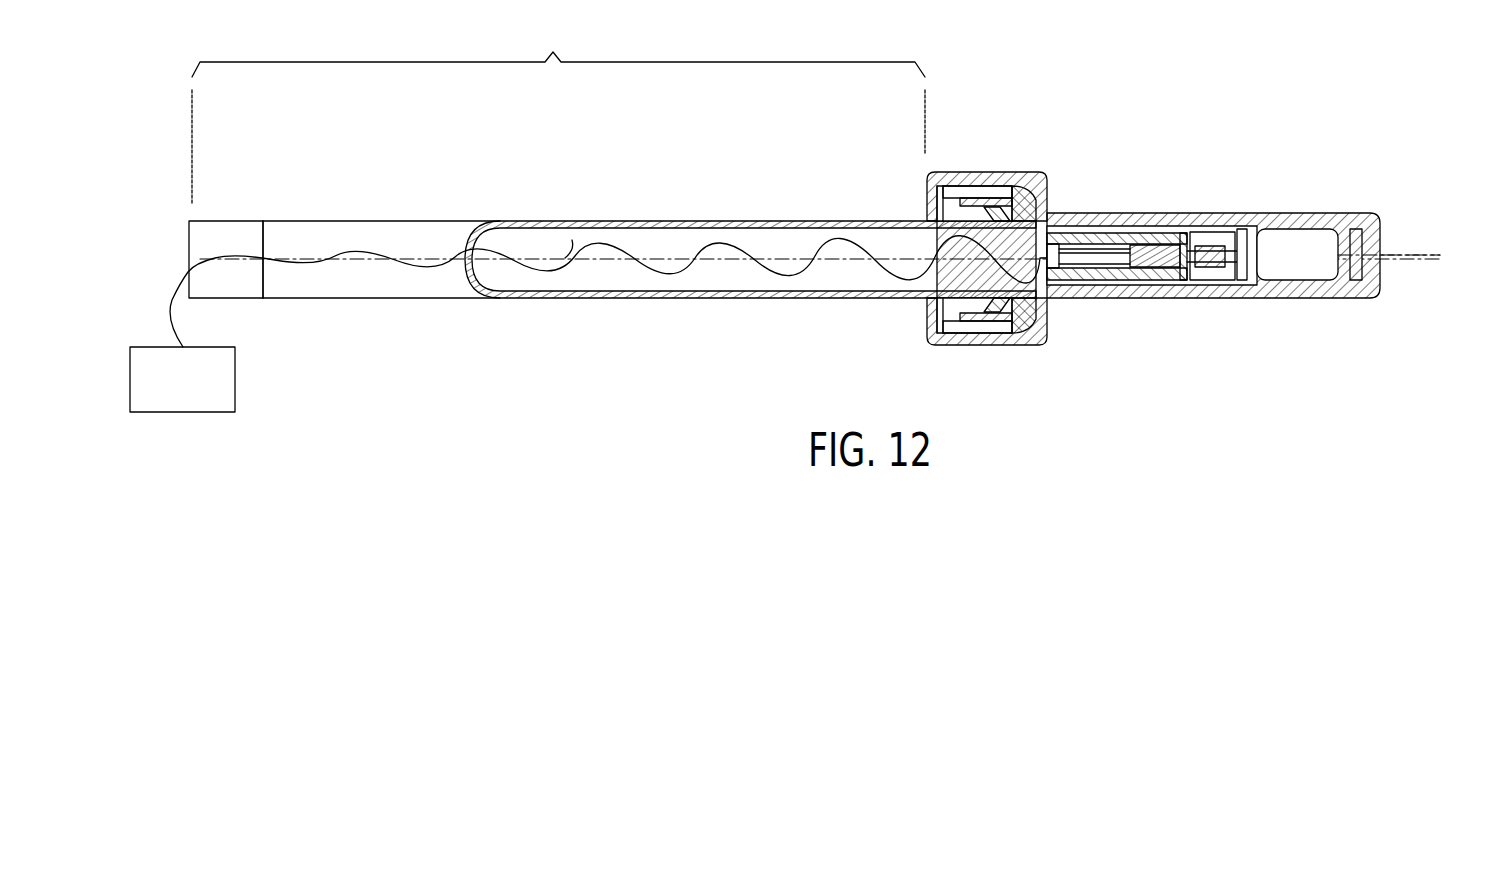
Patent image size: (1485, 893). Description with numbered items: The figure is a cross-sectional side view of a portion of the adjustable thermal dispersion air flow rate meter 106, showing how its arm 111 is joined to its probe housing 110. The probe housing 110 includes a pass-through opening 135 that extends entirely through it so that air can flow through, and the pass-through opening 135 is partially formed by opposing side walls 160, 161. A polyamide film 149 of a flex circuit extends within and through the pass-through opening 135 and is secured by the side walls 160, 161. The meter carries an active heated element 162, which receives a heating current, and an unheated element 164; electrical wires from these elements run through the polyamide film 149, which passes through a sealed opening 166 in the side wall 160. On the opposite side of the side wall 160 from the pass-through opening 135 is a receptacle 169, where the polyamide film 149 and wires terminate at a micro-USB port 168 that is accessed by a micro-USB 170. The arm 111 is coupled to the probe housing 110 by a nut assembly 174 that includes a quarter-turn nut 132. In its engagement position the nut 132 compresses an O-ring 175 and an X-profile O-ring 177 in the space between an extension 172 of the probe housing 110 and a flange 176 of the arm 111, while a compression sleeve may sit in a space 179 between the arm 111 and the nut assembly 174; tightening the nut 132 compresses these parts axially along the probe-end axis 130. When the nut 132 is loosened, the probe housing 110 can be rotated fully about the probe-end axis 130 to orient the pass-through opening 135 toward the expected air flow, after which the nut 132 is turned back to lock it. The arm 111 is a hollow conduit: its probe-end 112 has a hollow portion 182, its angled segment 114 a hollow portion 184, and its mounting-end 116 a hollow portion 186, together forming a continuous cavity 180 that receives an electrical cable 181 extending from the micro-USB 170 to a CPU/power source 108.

The adjustable thermal dispersion air flow rate meter 106 is at (1175, 180).
The CPU/power source 108 is at (183, 412).
The probe housing 110 is at (1152, 213).
The arm 111 is at (555, 56).
The probe-end 112 is at (758, 221).
The angled segment 114 is at (440, 221).
The mounting-end 116 is at (228, 221).
The probe-end axis 130 is at (1418, 254).
The nut 132 is at (988, 345).
The pass-through opening 135 is at (1296, 265).
The polyamide film 149 is at (1318, 270).
The side wall 160 is at (1270, 233).
The side wall 161 is at (1338, 235).
The active heated element 162 is at (1288, 245).
The unheated element 164 is at (1330, 298).
The sealed opening 166 is at (1252, 275).
The micro-USB port 168 is at (1212, 280).
The receptacle 169 is at (1212, 240).
The micro-USB 170 is at (1160, 280).
The extension 172 is at (996, 198).
The nut assembly 174 is at (962, 160).
The O-ring 175 is at (1018, 205).
The flange 176 is at (1057, 225).
The X-profile O-ring 177 is at (988, 213).
The space 179 is at (953, 303).
The cavity 180 is at (703, 243).
The electrical cable 181 is at (572, 240).
The hollow portion 182 is at (822, 285).
The hollow portion 184 is at (416, 251).
The hollow portion 186 is at (239, 251).